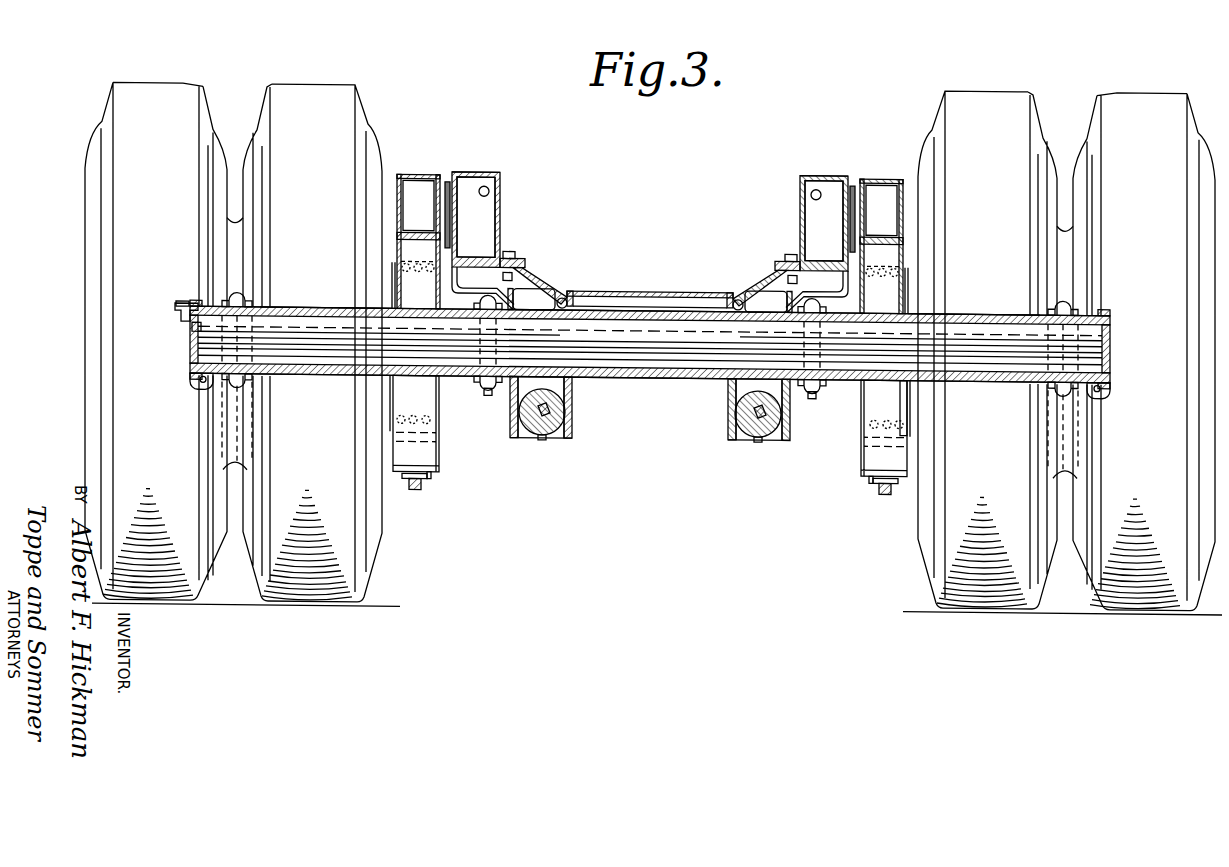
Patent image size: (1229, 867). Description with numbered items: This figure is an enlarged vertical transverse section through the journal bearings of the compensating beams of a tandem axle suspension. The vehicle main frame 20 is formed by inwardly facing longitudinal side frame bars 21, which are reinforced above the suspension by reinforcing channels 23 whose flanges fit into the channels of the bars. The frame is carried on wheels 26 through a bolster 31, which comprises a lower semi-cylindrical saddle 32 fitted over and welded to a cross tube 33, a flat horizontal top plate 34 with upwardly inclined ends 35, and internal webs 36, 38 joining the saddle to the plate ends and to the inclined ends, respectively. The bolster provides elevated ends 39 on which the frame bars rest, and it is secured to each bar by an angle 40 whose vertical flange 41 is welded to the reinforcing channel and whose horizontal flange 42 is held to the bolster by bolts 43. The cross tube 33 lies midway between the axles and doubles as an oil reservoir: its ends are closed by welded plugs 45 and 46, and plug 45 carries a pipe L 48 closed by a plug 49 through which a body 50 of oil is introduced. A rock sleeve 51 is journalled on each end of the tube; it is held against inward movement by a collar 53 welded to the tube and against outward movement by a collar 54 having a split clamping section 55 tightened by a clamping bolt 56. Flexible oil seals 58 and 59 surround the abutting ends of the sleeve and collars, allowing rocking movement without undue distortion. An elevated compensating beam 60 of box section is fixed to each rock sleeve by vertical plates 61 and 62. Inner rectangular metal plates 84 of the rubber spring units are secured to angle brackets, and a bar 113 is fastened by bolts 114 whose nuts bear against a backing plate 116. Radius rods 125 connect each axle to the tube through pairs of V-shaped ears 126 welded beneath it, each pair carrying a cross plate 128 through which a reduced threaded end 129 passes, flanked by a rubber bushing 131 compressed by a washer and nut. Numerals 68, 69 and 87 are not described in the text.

The main frame 20 is at (505, 170).
The longitudinal side frame bars 21 is at (462, 174).
The reinforcing channels 23 is at (493, 197).
The wheels 26 is at (272, 88).
The bolster 31 is at (645, 282).
The lower semi-cylindrical saddle 32 is at (672, 311).
The cross tube 33 is at (620, 378).
The flat horizontal top plate 34 is at (612, 292).
The upwardly inclined ends 35 is at (543, 287).
The internal webs or ribs 36 is at (568, 298).
The internal webs or ribs 38 is at (650, 301).
The elevated ends 39 is at (650, 283).
The angle 40 is at (502, 202).
The vertical flange 41 is at (500, 180).
The horizontal flange 42 is at (515, 276).
The bolts 43 is at (512, 253).
The welded plug 45 is at (190, 350).
The welded plug 46 is at (1110, 347).
The pipe L 48 is at (176, 323).
The plug 49 is at (178, 306).
The body of oil 50 is at (690, 368).
The rock sleeve 51 is at (326, 310).
The ring or collar 53 is at (500, 392).
The ring or collar 54 is at (203, 305).
The split clamping section 55 is at (196, 304).
The clamping bolt 56 is at (192, 394).
The oil seal 58 is at (485, 396).
The oil seal 59 is at (245, 390).
The compensating beam 60 is at (424, 174).
The vertical plate 61 is at (397, 189).
The vertical plate 62 is at (448, 182).
The inner spring tube 68 is at (856, 228).
The rubber block 69 is at (650, 207).
The inner rectangular metal plate 84 is at (393, 434).
The shock absorber bracket 87 is at (907, 436).
The bar 113 is at (440, 470).
The bolts 114 is at (410, 490).
The backing plate 116 is at (432, 481).
The radius rods 125 is at (752, 440).
The V-shaped ears 126 is at (728, 430).
The cross plate 128 is at (735, 441).
The reduced threaded end 129 is at (760, 440).
The rubber bushing 131 is at (770, 441).